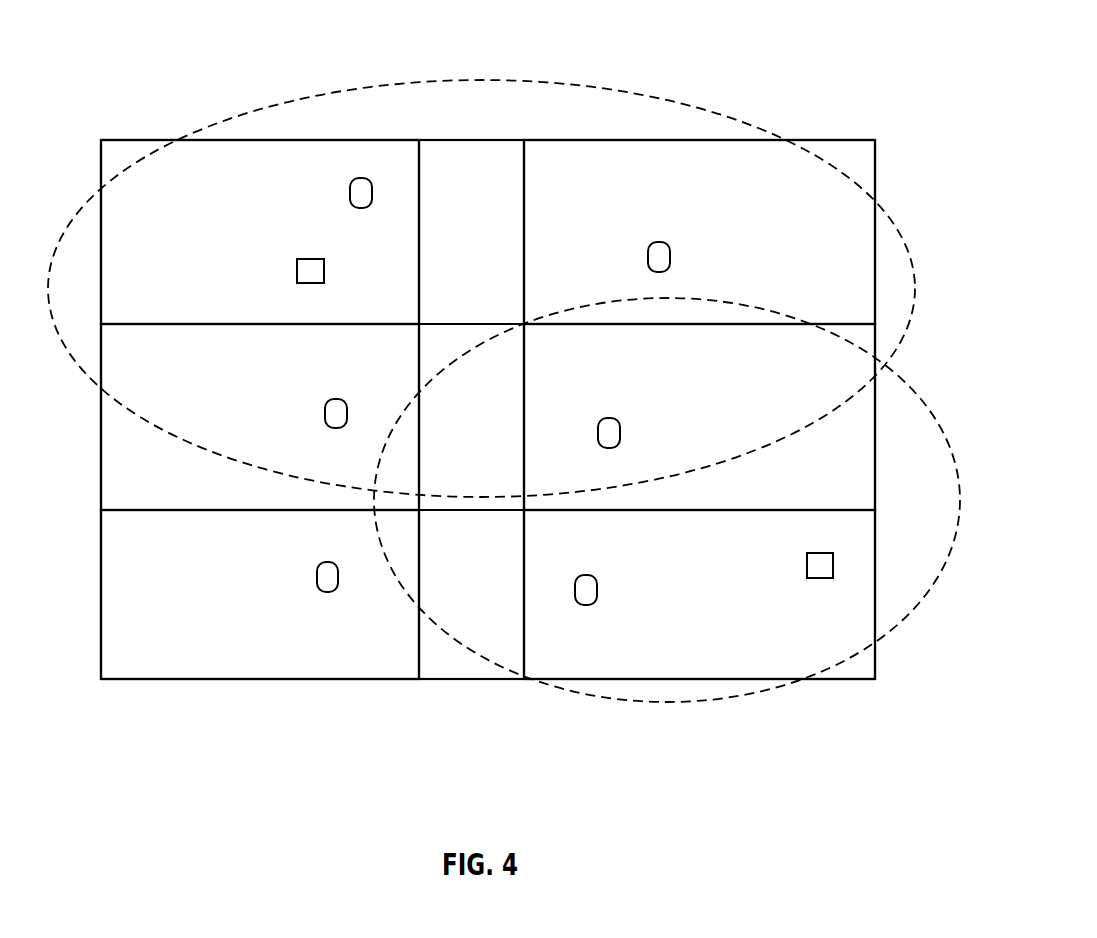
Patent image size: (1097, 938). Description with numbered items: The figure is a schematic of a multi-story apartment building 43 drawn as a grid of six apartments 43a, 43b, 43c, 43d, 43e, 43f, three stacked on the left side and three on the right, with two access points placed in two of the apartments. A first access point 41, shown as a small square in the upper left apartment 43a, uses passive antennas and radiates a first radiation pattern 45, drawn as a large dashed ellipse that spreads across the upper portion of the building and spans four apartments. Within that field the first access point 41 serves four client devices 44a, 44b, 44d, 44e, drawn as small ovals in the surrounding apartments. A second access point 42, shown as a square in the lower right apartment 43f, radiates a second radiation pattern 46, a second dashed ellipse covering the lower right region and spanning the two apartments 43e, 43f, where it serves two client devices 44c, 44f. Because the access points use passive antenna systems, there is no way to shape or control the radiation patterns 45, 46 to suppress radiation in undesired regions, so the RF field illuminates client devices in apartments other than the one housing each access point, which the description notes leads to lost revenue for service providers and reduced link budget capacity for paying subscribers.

The first access point 41 is at (317, 258).
The second access point 42 is at (823, 553).
The multi-story apartment building 43 is at (475, 680).
The apartment 43a is at (110, 156).
The apartment 43b is at (110, 459).
The apartment 43c is at (112, 598).
The apartment 43d is at (867, 162).
The apartment 43e is at (860, 480).
The apartment 43f is at (862, 600).
The client device 44a is at (350, 195).
The client device 44b is at (325, 413).
The client device 44c is at (317, 574).
The client device 44d is at (670, 257).
The client device 44e is at (620, 433).
The client device 44f is at (597, 590).
The first radiation pattern 45 is at (477, 79).
The second radiation pattern 46 is at (705, 703).